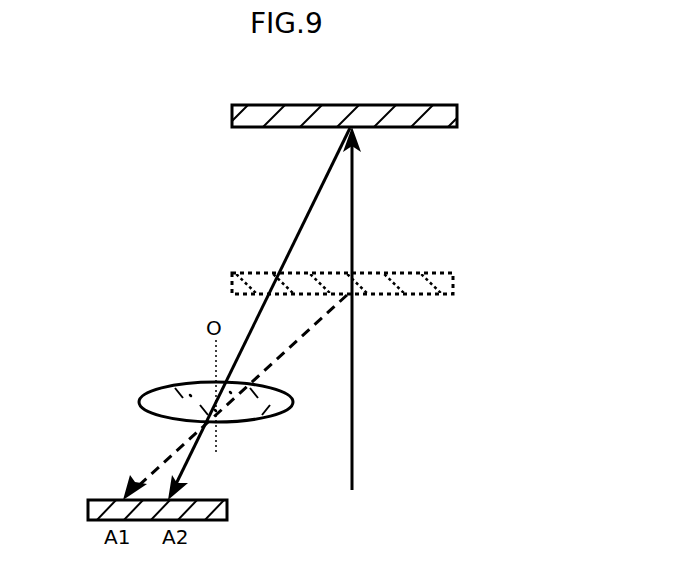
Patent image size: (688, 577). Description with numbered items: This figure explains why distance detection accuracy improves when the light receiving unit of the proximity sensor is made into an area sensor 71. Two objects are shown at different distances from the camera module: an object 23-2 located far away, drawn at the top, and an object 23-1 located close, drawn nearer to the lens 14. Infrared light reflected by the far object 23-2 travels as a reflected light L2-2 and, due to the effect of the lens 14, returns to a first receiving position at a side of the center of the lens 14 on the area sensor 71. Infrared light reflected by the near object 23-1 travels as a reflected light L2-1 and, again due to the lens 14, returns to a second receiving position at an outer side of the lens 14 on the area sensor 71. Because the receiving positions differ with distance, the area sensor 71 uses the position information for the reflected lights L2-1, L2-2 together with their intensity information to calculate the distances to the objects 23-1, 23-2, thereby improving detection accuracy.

The object 23-2 is at (457, 108).
The object 23-1 is at (453, 286).
The area sensor 71 is at (227, 508).
The lens 14 is at (139, 400).
The reflected light L2-2 is at (320, 177).
The reflected light L2-1 is at (323, 315).